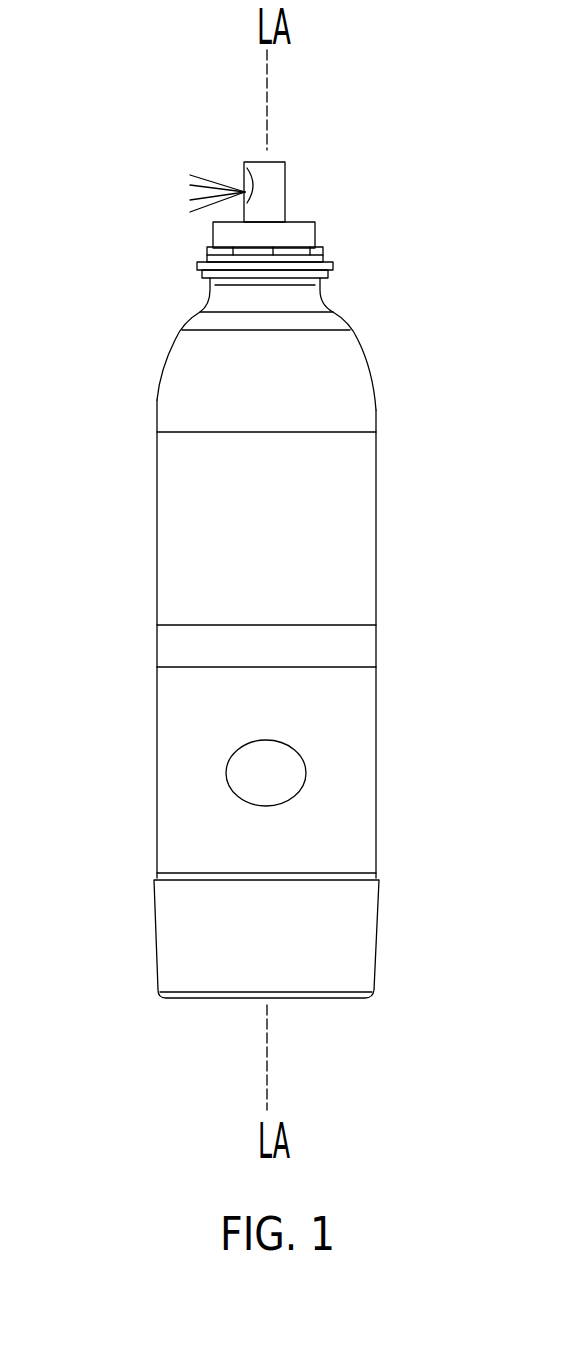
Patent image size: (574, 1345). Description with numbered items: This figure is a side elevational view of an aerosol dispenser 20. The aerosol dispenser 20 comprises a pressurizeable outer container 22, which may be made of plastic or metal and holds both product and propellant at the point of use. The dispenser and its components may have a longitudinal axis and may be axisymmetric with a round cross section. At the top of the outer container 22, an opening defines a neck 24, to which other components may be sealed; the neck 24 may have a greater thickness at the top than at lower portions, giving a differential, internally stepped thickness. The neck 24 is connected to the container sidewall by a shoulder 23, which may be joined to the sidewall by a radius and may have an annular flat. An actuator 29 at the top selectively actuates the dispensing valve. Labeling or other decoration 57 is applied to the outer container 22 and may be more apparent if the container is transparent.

The aerosol dispenser 20 is at (138, 460).
The outer container 22 is at (167, 738).
The shoulder 23 is at (360, 343).
The neck 24 is at (180, 245).
The actuator 29 is at (268, 210).
The labeling or other decoration 57 is at (277, 660).